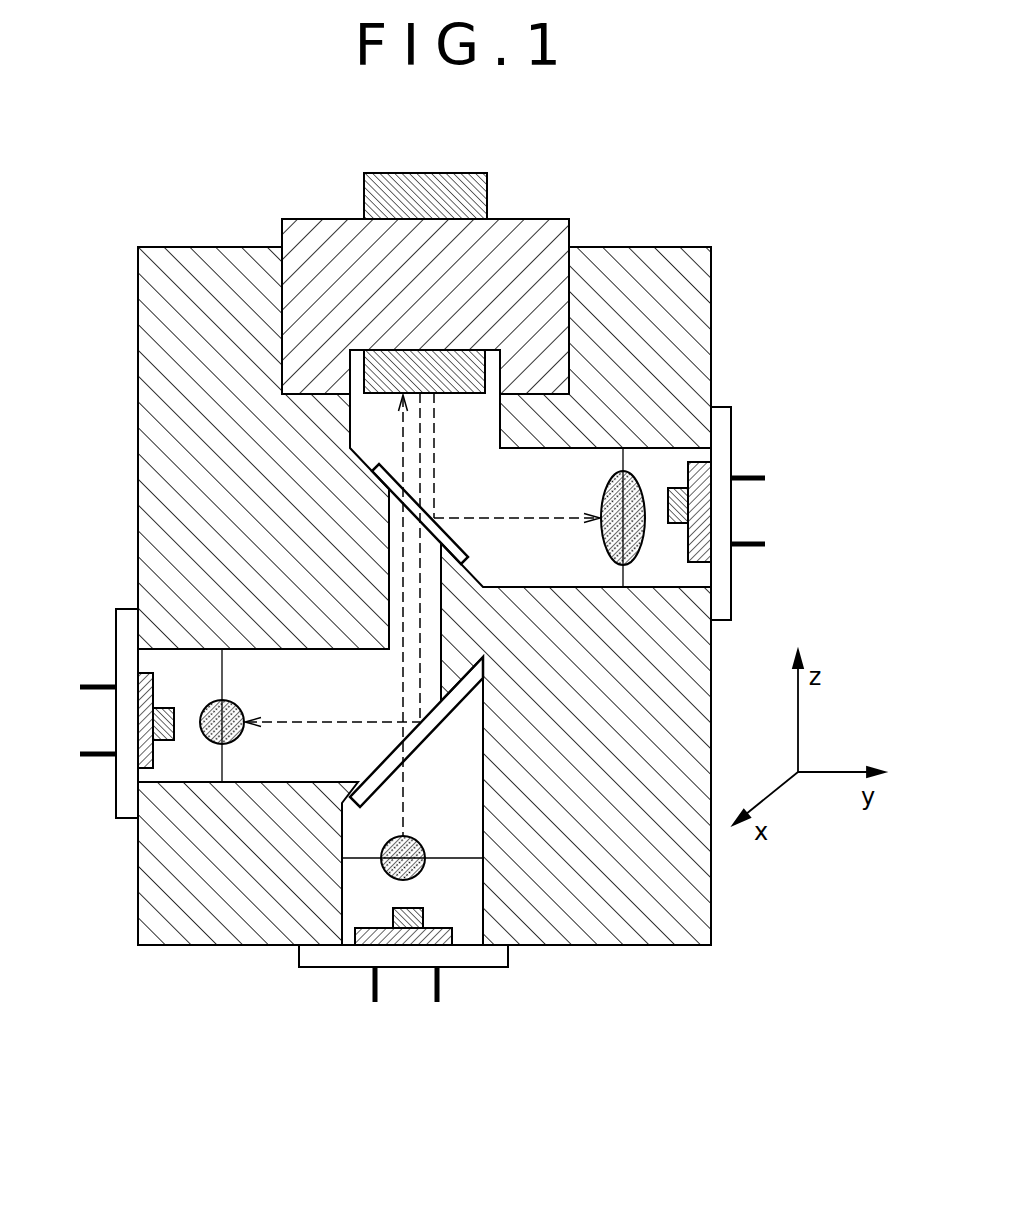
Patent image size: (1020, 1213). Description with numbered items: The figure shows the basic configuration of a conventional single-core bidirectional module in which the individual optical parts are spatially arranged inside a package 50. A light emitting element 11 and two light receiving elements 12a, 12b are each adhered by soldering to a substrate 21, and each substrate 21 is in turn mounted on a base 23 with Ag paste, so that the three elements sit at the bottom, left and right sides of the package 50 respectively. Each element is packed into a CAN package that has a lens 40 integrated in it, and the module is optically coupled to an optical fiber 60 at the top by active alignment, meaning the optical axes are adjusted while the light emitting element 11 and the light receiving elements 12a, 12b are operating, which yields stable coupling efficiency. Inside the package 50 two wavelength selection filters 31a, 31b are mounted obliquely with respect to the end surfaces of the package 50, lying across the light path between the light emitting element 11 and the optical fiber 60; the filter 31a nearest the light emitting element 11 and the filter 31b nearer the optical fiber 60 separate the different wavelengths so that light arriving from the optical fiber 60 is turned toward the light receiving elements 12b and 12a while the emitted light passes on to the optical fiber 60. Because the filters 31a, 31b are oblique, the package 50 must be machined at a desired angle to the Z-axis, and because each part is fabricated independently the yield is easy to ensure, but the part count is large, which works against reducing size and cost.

The package 50 is at (150, 455).
The optical fiber 60 is at (475, 196).
The lens 40 is at (230, 710).
The wavelength selection filter 31a is at (385, 767).
The wavelength selection filter 31b is at (460, 543).
The base 23 is at (123, 660).
The substrate 21 is at (142, 754).
The light receiving element 12a is at (683, 503).
The light receiving element 12b is at (158, 720).
The light emitting element 11 is at (407, 925).